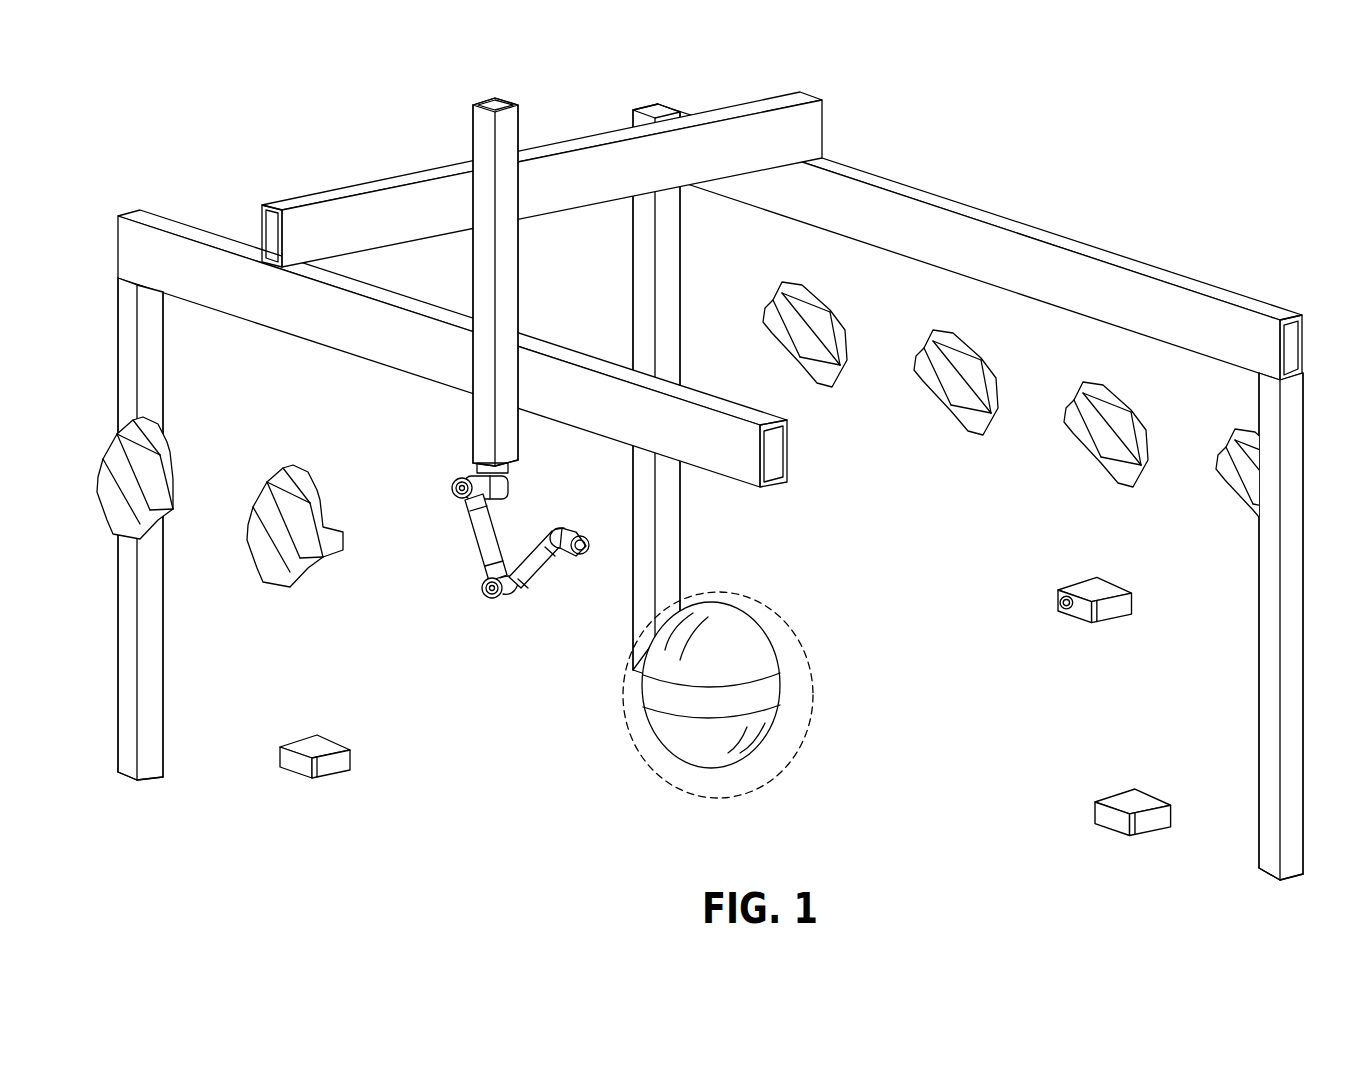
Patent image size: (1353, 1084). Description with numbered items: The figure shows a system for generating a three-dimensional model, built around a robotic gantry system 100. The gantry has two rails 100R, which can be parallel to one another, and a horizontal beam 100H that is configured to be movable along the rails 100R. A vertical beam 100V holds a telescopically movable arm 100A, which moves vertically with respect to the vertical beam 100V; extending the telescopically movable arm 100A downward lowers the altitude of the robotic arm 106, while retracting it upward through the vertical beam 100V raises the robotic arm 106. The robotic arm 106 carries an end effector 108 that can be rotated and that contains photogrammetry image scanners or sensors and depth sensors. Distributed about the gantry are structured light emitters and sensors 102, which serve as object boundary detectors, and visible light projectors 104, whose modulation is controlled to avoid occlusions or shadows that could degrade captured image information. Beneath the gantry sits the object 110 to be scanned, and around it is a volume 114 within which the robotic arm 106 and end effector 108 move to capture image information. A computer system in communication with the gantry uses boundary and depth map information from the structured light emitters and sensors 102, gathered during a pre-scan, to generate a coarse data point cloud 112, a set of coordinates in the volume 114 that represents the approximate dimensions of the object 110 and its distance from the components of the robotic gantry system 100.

The robotic gantry system 100 is at (710, 479).
The rails 100R is at (1145, 267).
The horizontal beam 100H is at (562, 138).
The vertical beam 100V is at (472, 130).
The telescopically movable arm 100A is at (512, 478).
The structured light emitters and sensors 102 is at (277, 750).
The visible light projectors 104 is at (777, 295).
The robotic arm 106 is at (450, 490).
The end effector 108 is at (585, 553).
The object 110 is at (773, 735).
The coarse data point cloud 112 is at (810, 665).
The volume 114 is at (868, 594).